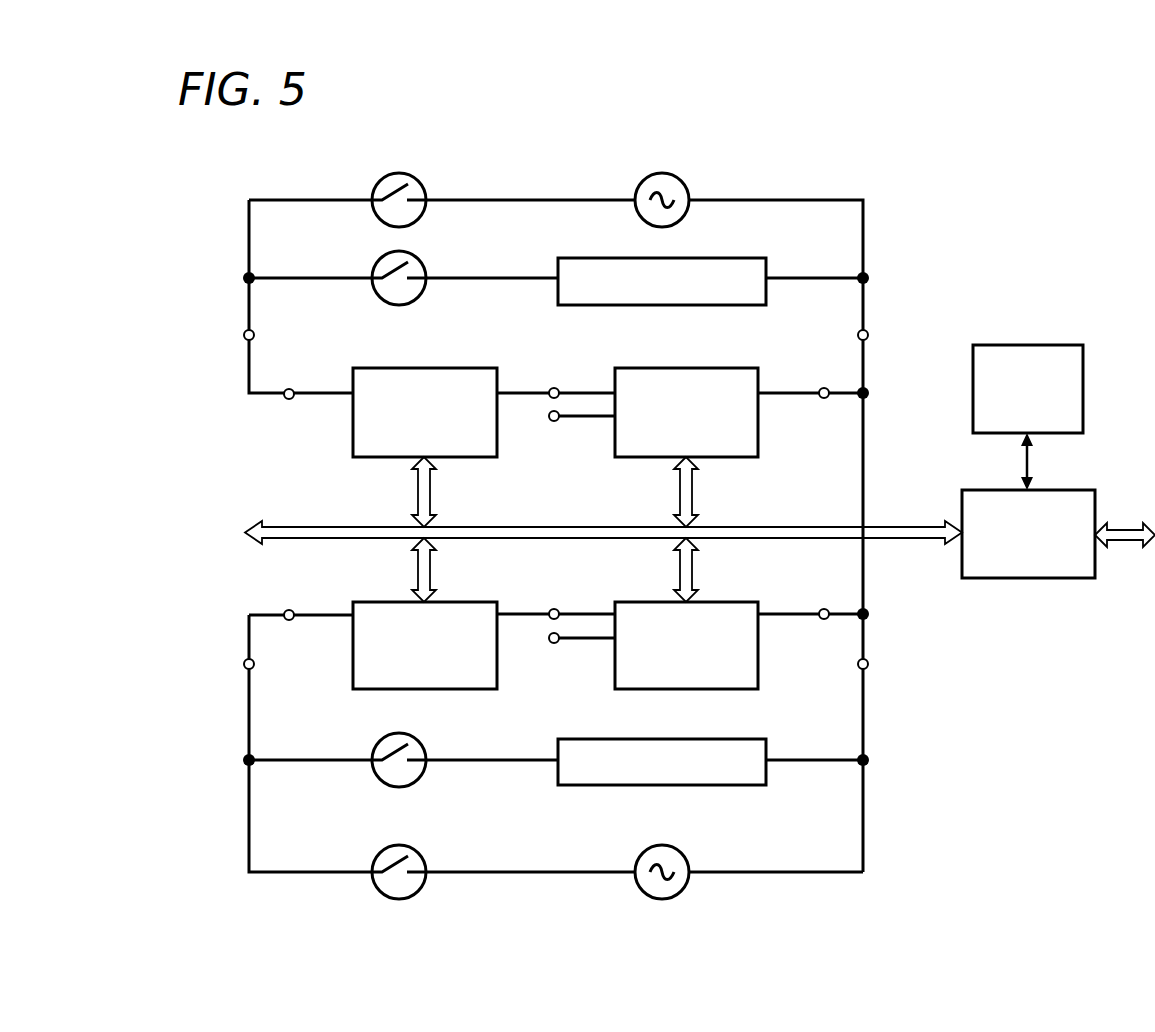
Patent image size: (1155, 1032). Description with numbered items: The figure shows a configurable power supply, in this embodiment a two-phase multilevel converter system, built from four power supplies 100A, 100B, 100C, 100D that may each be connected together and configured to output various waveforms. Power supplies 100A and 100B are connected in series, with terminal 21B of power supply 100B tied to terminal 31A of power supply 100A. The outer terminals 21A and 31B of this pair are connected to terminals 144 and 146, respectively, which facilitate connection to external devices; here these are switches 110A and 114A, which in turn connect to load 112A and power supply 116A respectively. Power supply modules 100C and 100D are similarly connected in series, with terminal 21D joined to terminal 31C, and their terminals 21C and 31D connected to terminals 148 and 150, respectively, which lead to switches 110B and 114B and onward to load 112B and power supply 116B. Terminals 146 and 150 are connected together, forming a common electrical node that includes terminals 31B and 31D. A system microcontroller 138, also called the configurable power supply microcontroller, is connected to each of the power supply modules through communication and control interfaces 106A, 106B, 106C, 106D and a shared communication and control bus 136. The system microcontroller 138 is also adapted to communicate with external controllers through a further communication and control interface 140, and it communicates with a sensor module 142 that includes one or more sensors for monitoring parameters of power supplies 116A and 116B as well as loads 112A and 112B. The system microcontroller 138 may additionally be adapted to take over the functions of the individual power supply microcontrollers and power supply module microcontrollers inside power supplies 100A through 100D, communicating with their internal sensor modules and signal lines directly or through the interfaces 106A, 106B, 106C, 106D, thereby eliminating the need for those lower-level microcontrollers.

The switch 114A is at (378, 184).
The power supply 116A is at (648, 176).
The switch 110A is at (378, 262).
The load 112A is at (584, 262).
The terminal 144 is at (244, 335).
The terminal 146 is at (868, 333).
The power supply 100A is at (443, 417).
The power supply 100B is at (709, 417).
The power supply module 100C is at (443, 655).
The power supply module 100D is at (709, 655).
The terminal 21A is at (289, 400).
The terminal 21B is at (554, 421).
The terminal 21C is at (289, 620).
The terminal 21D is at (554, 643).
The terminal 31A is at (554, 388).
The terminal 31B is at (824, 388).
The terminal 31C is at (554, 609).
The terminal 31D is at (824, 609).
The communication and control bus 136 is at (245, 531).
The communication and control interface 106A is at (431, 492).
The communication and control interface 106B is at (693, 492).
The communication and control interface 106C is at (417, 571).
The communication and control interface 106D is at (679, 571).
The terminal 148 is at (244, 664).
The terminal 150 is at (858, 664).
The switch 110B is at (378, 744).
The load 112B is at (734, 786).
The power supply 116B is at (648, 848).
The switch 114B is at (378, 856).
The sensor module 142 is at (1084, 386).
The system microcontroller 138 is at (1029, 581).
The communication and control interface 140 is at (1127, 523).